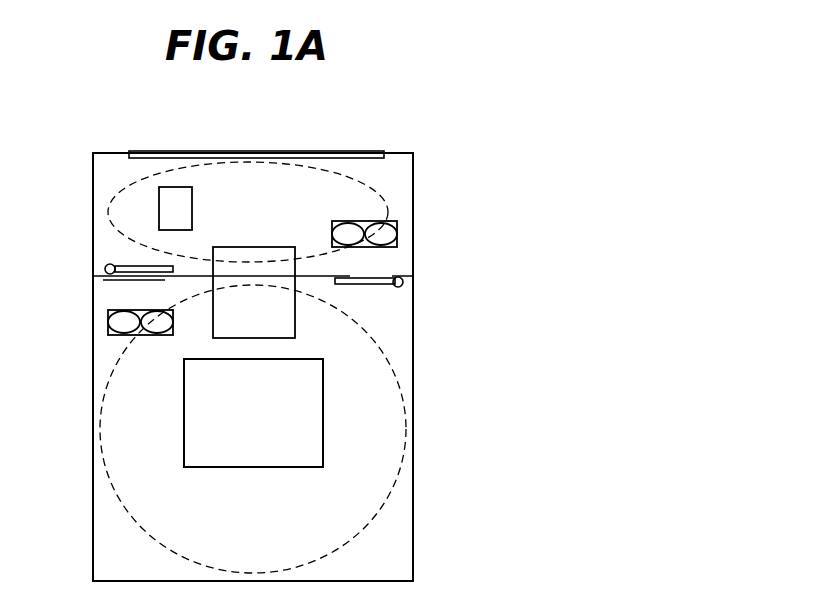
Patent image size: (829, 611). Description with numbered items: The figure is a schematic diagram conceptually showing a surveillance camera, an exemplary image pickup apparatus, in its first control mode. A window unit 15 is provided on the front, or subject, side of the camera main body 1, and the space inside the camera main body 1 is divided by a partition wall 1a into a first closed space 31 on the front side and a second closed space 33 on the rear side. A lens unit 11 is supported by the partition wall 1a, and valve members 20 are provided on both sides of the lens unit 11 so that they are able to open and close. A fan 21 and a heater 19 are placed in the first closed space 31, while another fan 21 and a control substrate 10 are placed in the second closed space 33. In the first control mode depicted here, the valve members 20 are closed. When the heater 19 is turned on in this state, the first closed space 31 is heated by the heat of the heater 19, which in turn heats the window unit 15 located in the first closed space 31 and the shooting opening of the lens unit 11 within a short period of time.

The camera main body 1 is at (108, 152).
The partition wall 1a is at (170, 278).
The control substrate 10 is at (323, 392).
The lens unit 11 is at (295, 325).
The window unit 15 is at (315, 150).
The heater 19 is at (177, 195).
The valve members 20 is at (137, 265).
The fan 21 is at (375, 236).
The first closed space 31 is at (250, 187).
The second closed space 33 is at (388, 435).